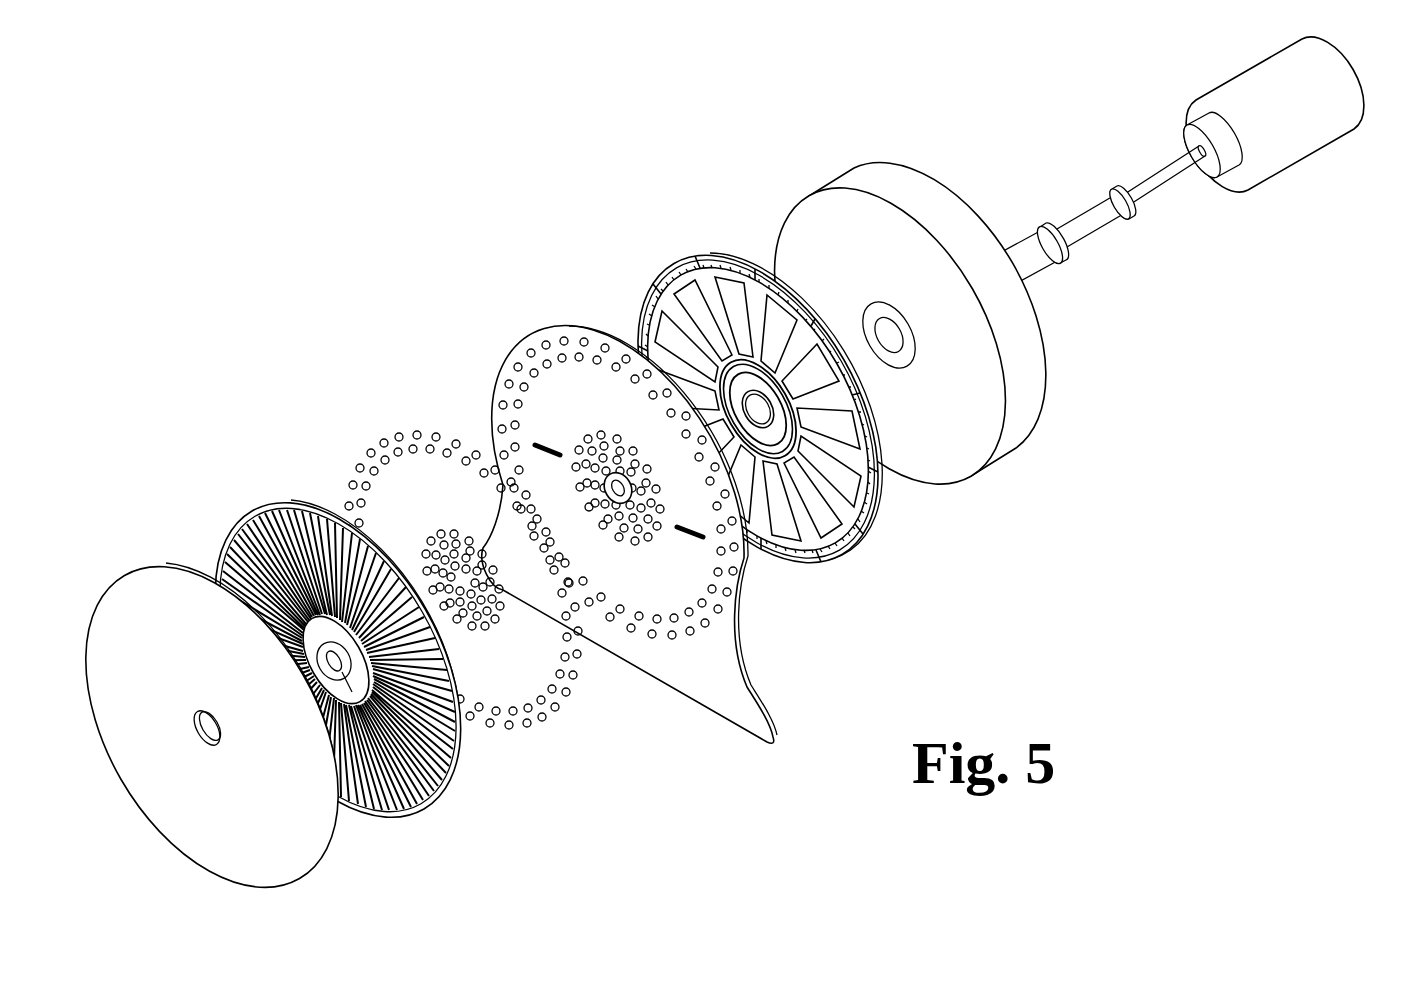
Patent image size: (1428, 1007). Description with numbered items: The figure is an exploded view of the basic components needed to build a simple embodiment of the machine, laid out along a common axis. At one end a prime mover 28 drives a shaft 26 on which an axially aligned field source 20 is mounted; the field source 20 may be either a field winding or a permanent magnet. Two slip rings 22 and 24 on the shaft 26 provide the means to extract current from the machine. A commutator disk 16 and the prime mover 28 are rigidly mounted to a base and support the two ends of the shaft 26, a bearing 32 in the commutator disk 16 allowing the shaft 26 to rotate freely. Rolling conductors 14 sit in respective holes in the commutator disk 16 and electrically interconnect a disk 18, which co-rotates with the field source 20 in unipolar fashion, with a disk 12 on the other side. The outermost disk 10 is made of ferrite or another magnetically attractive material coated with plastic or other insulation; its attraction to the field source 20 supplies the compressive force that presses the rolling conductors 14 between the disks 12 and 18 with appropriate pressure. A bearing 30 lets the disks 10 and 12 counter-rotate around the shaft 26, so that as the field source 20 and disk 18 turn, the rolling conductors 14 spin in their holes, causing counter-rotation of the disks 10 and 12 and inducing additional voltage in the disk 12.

The disk 10 is at (317, 832).
The disk 12 is at (342, 670).
The rolling conductors 14 is at (533, 732).
The commutator disk 16 is at (515, 343).
The disk 18 is at (660, 272).
The field source 20 is at (987, 463).
The slip ring 22 is at (1033, 230).
The slip ring 24 is at (1100, 197).
The shaft 26 is at (1183, 152).
The prime mover 28 is at (1318, 155).
The bearing 30 is at (395, 793).
The bearing 32 is at (628, 505).